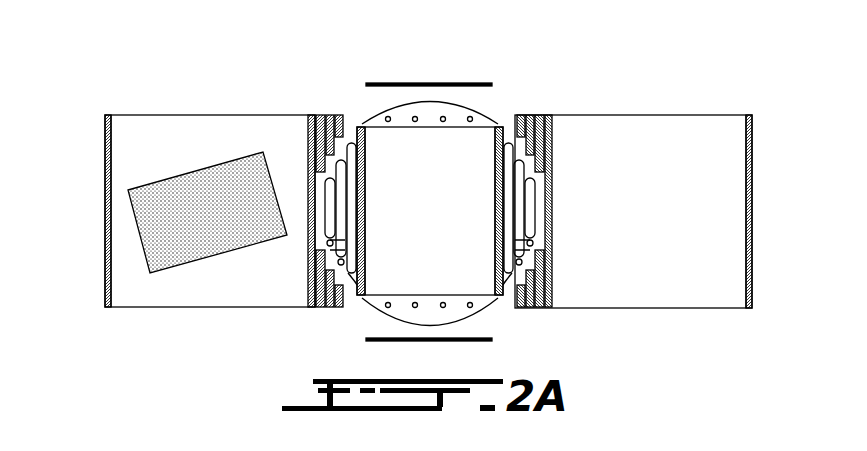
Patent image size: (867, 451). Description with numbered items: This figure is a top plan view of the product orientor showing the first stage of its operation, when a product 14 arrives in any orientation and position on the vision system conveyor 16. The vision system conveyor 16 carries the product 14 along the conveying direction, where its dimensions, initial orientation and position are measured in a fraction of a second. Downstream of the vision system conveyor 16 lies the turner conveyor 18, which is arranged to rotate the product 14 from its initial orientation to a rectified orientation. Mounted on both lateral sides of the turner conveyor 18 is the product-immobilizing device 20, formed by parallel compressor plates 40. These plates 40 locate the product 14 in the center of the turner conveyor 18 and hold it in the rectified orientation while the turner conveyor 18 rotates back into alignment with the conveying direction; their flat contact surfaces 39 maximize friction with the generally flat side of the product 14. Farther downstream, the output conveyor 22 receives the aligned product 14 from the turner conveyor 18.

The product 14 is at (197, 198).
The vision system conveyor 16 is at (165, 296).
The turner conveyor 18 is at (496, 109).
The product-immobilizing device 20 is at (377, 85).
The output conveyor 22 is at (652, 116).
The flat contact surfaces 39 is at (432, 86).
The compressor plates 40 is at (403, 83).